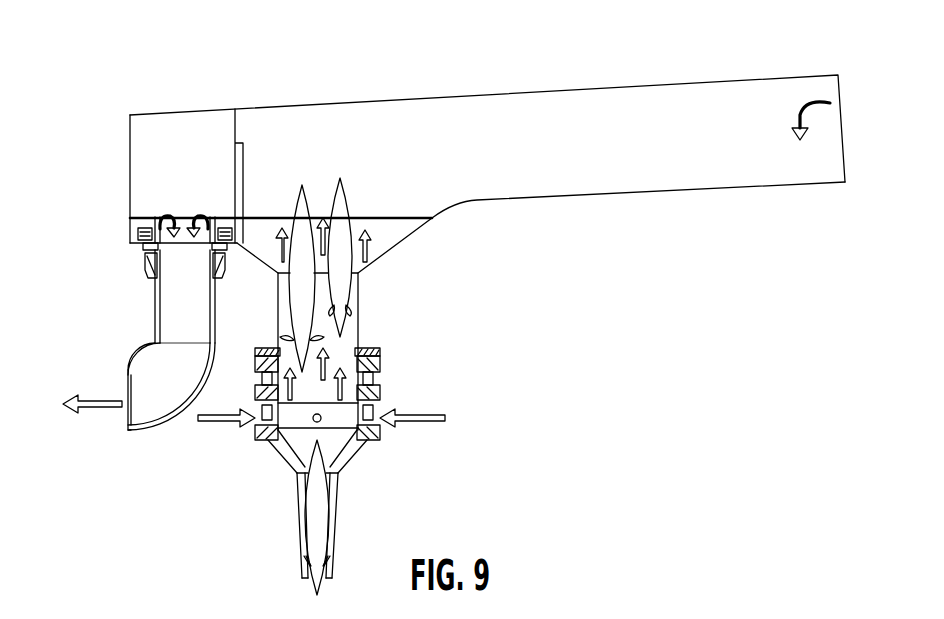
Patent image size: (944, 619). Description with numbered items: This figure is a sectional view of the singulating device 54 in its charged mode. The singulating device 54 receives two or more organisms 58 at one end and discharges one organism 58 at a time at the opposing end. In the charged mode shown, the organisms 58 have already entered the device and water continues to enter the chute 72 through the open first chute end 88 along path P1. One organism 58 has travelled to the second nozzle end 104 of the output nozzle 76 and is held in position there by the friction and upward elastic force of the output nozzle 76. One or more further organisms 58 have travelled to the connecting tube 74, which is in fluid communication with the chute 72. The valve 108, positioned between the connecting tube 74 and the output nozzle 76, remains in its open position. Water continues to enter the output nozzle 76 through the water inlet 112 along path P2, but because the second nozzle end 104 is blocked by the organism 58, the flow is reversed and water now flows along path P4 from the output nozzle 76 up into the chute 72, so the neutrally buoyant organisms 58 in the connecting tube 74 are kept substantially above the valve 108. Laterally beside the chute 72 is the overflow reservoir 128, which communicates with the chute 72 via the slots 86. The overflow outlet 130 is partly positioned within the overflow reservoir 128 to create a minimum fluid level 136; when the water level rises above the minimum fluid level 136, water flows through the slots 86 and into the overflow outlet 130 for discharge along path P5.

The singulating device 54 is at (214, 52).
The first chute end 88 is at (570, 92).
The chute 72 is at (622, 185).
The minimum fluid level 136 is at (388, 210).
The slots 86 is at (243, 158).
The overflow reservoir 128 is at (140, 155).
The path P5 is at (185, 213).
The overflow outlet 130 is at (170, 328).
The organisms 58 is at (345, 296).
The connecting tube 74 is at (278, 338).
The valve 108 is at (378, 348).
The water inlet 112 is at (380, 415).
The path P4 is at (262, 392).
The path P2 is at (412, 425).
The output nozzle 76 is at (302, 465).
The second nozzle end 104 is at (330, 565).
The path P1 is at (790, 128).